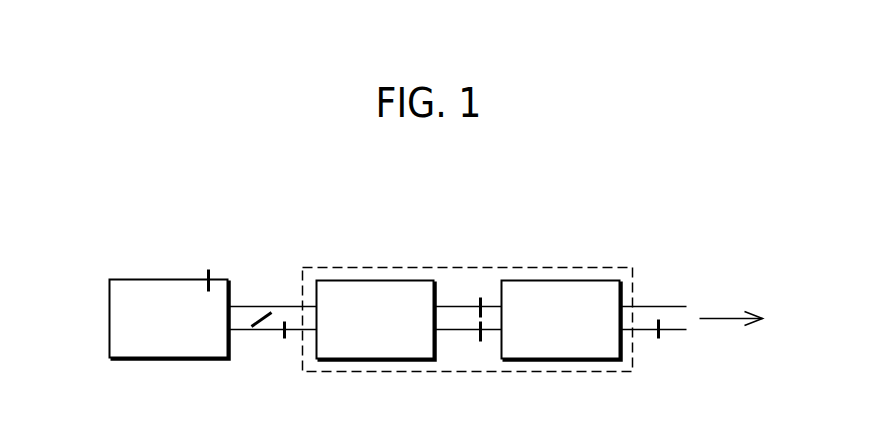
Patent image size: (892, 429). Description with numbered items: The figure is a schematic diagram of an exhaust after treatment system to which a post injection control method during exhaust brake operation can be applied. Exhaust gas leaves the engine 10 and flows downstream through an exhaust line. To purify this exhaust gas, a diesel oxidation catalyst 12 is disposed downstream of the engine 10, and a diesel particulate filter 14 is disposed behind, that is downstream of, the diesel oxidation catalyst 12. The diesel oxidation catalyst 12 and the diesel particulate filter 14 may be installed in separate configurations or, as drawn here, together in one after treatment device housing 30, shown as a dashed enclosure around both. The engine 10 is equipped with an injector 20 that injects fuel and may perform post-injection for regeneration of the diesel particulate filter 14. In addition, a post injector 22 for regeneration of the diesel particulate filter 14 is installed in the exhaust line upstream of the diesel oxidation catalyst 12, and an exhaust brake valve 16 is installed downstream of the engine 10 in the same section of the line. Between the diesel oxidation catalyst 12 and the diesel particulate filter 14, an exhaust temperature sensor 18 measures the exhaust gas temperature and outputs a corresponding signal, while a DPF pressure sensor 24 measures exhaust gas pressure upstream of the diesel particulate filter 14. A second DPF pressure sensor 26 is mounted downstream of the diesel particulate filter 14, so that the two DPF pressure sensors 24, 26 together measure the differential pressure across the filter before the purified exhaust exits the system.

The engine 10 is at (167, 358).
The diesel oxidation catalyst 12 is at (373, 359).
The diesel particulate filter 14 is at (558, 359).
The exhaust brake valve 16 is at (256, 314).
The exhaust temperature sensor 18 is at (480, 297).
The injector 20 is at (208, 270).
The post injector 22 is at (285, 339).
The DPF pressure sensor 24 is at (480, 342).
The DPF pressure sensor 26 is at (660, 339).
The after treatment device housing 30 is at (422, 372).